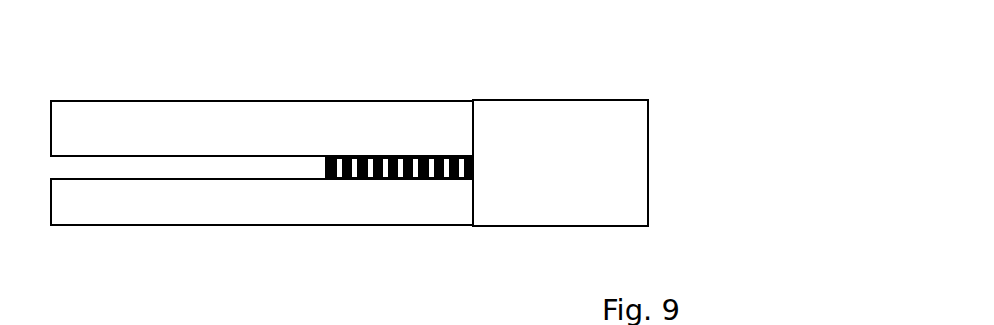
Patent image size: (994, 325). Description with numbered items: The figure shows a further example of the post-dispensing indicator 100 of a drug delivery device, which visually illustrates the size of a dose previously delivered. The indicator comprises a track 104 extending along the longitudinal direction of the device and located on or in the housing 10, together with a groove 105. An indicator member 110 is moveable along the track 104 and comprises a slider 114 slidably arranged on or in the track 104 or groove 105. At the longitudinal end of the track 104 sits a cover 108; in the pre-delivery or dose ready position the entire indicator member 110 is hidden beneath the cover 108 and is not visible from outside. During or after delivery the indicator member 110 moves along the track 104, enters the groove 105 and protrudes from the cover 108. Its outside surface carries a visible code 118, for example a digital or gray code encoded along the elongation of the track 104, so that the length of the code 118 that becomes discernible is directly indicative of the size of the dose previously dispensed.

The post-dispensing indicator 100 is at (199, 85).
The housing 10 is at (324, 90).
The cover 108 is at (613, 110).
The indicator member 110 is at (400, 150).
The slider 114 is at (444, 180).
The track 104 is at (264, 162).
The groove 105 is at (305, 168).
The code 118 is at (408, 192).